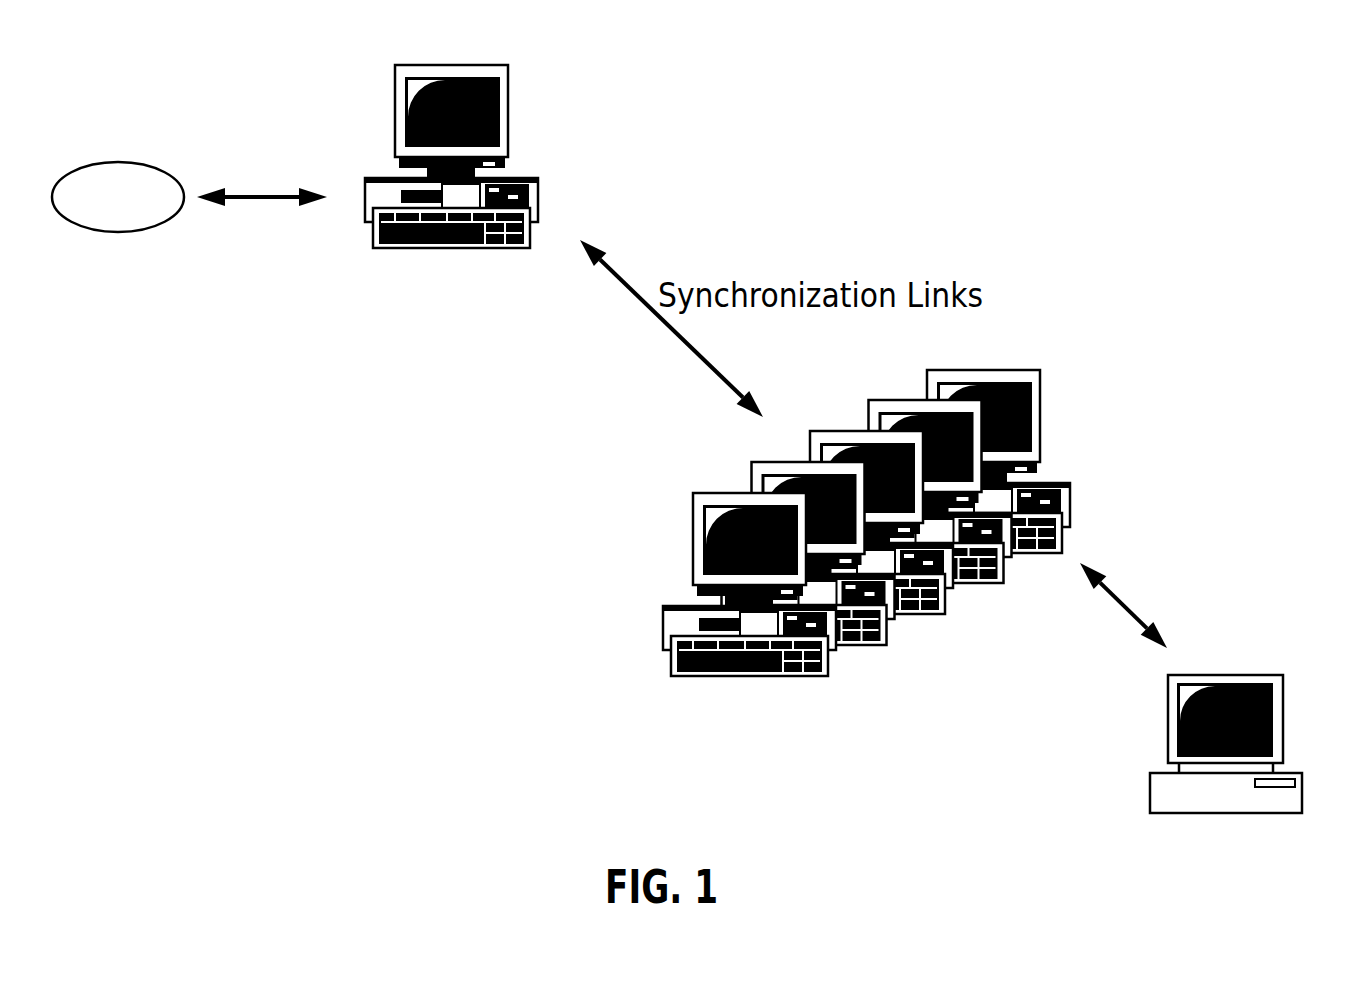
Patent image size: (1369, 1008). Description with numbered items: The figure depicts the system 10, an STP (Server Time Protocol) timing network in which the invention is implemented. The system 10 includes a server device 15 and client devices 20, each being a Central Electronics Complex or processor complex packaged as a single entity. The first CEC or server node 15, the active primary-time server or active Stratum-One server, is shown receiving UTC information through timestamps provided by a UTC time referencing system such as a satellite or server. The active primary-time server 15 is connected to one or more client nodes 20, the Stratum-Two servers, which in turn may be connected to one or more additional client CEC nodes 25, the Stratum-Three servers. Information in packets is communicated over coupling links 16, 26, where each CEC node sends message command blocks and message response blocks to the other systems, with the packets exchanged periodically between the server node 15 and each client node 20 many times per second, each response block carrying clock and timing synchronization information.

The system 10 is at (293, 74).
The server device 15 is at (508, 91).
The coupling link 16 is at (620, 270).
The client devices 20 is at (1040, 402).
The additional client CEC or nodes 25 is at (1281, 681).
The coupling link 26 is at (1123, 600).